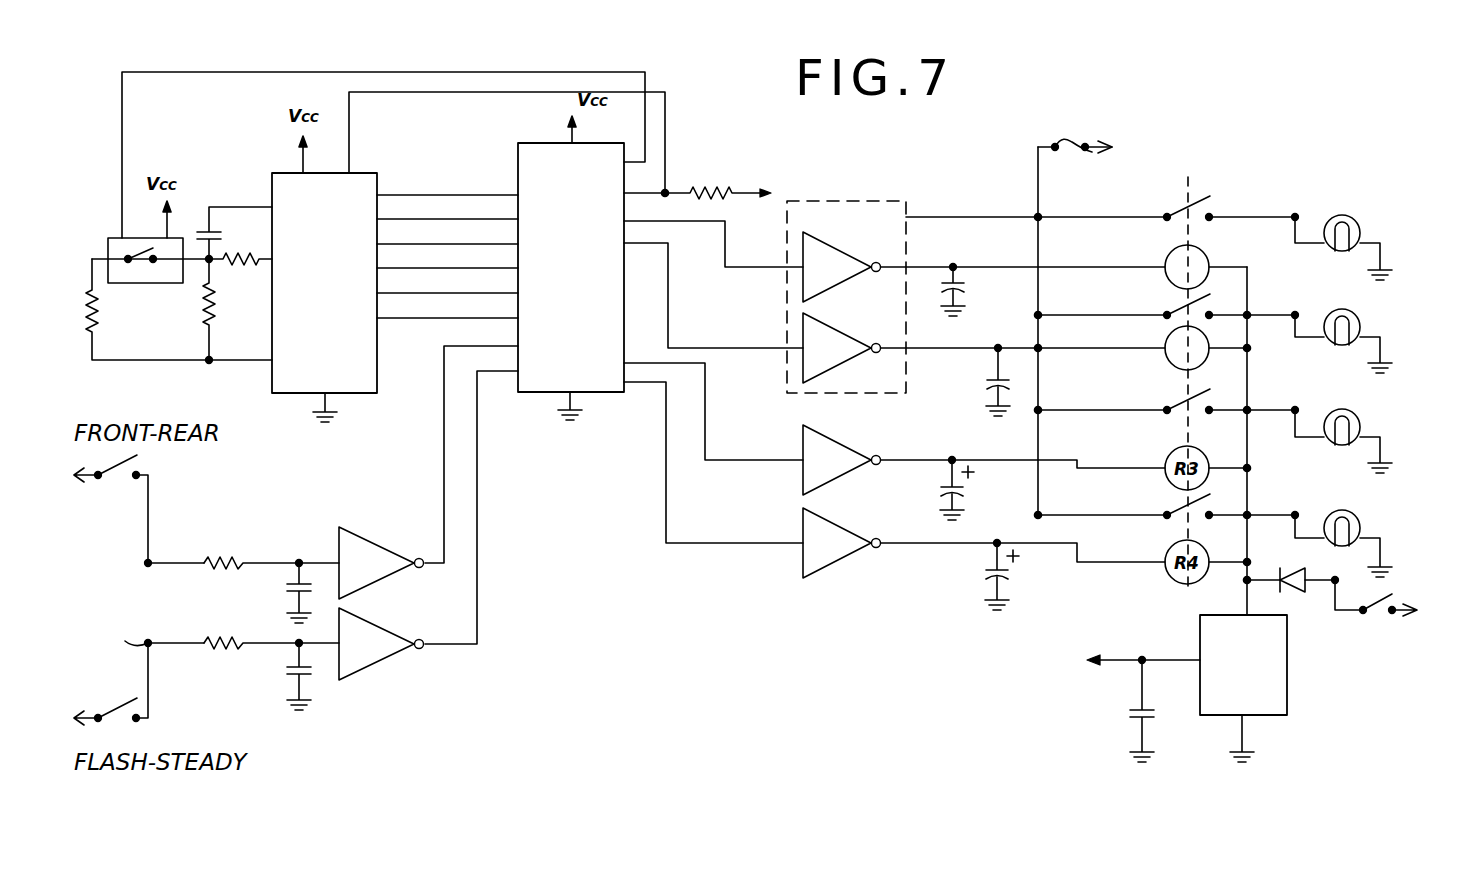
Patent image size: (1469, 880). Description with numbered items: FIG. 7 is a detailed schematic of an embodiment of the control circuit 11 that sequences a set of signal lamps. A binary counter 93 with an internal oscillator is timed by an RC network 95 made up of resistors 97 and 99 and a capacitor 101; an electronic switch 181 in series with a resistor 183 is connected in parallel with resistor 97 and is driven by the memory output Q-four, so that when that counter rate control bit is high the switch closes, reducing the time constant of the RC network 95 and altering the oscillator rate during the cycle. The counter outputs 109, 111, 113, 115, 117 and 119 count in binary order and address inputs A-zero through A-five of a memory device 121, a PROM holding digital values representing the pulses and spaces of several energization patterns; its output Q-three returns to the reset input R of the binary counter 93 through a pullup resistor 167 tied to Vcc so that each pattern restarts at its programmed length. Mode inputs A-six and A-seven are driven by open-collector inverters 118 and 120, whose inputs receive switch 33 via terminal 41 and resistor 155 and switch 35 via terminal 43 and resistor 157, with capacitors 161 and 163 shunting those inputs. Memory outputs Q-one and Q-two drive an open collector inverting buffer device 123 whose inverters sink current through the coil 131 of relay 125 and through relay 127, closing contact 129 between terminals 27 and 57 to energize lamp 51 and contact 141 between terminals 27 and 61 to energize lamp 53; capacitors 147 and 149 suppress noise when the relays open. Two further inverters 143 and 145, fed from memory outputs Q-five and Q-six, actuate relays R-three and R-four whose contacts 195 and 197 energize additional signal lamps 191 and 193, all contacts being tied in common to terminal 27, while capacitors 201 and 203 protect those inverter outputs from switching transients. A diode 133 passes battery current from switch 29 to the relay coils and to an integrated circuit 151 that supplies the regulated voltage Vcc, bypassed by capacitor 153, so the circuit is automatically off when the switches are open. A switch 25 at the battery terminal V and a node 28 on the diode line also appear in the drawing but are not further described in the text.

The control circuit 11 is at (316, 779).
The power switch 25 is at (1085, 141).
The terminal 27 is at (1037, 216).
The supply node 28 is at (1333, 593).
The switch 29 is at (1380, 613).
The switch 33 is at (118, 464).
The switch 35 is at (122, 708).
The terminal 41 is at (145, 566).
The terminal 43 is at (147, 642).
The lamp 51 is at (1358, 222).
The lamp 53 is at (1358, 329).
The terminal 57 is at (1296, 215).
The terminal 61 is at (1293, 319).
The binary counter 93 is at (368, 173).
The RC network 95 is at (160, 378).
The resistor 97 is at (204, 309).
The resistor 99 is at (250, 266).
The capacitor 101 is at (209, 230).
The binary counter output 109 is at (400, 193).
The binary counter output 111 is at (402, 218).
The binary counter output 113 is at (402, 243).
The binary counter output 115 is at (402, 267).
The binary counter output 117 is at (402, 292).
The inverter 118 is at (385, 531).
The binary counter output 119 is at (400, 320).
The inverter 120 is at (390, 661).
The memory device 121 is at (579, 390).
The open collector inverting buffer device 123 is at (857, 200).
The relay 125 is at (1230, 251).
The relay 127 is at (1156, 365).
The contact 129 is at (1168, 216).
The coil 131 is at (1165, 269).
The diode 133 is at (1302, 571).
The contact 141 is at (1170, 313).
The inverter 143 is at (848, 450).
The inverter 145 is at (832, 566).
The capacitor 147 is at (966, 285).
The capacitor 149 is at (986, 380).
The integrated circuit 151 is at (1287, 689).
The capacitor 153 is at (1130, 715).
The resistor 155 is at (238, 558).
The resistor 157 is at (235, 650).
The capacitor 161 is at (290, 592).
The capacitor 163 is at (310, 676).
The pullup resistor 167 is at (724, 197).
The electronic switch 181 is at (108, 238).
The resistor 183 is at (98, 333).
The signal lamp 191 is at (1358, 438).
The signal lamp 193 is at (1358, 522).
The contact 195 is at (1172, 420).
The contact 197 is at (1168, 513).
The capacitor 201 is at (938, 493).
The capacitor 203 is at (986, 569).